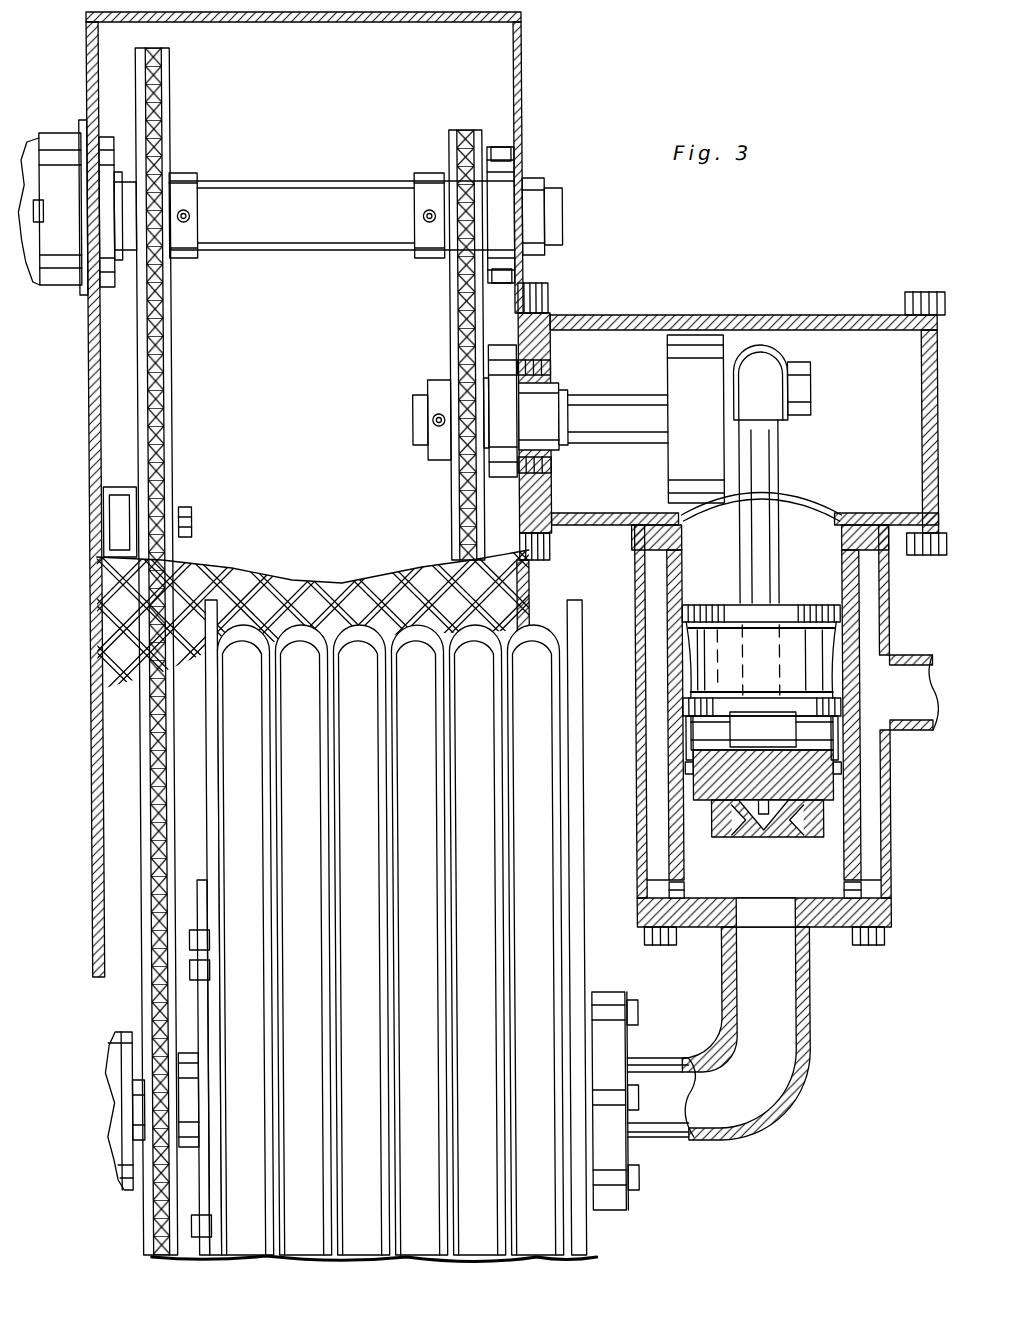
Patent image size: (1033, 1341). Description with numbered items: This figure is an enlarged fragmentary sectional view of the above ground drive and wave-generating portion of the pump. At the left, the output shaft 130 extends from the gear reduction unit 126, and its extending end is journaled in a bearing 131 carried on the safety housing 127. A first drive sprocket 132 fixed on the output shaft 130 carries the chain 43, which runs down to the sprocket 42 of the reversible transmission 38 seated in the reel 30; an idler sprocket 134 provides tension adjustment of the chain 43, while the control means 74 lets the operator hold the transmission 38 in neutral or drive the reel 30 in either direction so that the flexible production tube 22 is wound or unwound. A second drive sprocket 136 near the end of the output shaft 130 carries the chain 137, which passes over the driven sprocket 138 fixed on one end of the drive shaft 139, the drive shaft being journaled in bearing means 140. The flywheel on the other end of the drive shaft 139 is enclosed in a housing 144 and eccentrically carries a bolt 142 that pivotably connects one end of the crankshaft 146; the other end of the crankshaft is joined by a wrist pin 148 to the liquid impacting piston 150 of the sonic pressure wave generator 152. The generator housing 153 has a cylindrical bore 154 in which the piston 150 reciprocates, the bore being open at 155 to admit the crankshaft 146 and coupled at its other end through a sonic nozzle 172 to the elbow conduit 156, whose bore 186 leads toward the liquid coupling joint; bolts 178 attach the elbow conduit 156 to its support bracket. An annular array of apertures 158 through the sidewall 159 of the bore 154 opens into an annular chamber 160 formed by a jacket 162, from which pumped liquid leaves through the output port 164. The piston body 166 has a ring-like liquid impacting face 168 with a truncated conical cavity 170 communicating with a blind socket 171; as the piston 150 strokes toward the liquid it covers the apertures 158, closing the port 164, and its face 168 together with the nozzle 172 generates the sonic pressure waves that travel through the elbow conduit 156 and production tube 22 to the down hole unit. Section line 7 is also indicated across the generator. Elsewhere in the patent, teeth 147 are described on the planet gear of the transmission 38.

The flexible production tube 22 is at (258, 1248).
The reel 30 is at (600, 1263).
The reversible transmission 38 is at (206, 915).
The sprocket 42 is at (196, 1058).
The chain 43 is at (172, 385).
The control means 74 is at (99, 1104).
The gear reduction unit 126 is at (75, 135).
The safety housing 127 is at (520, 95).
The output shaft 130 is at (286, 186).
The bearing 131 is at (536, 180).
The first drive sprocket 132 is at (198, 185).
The idler sprocket 134 is at (192, 528).
The second drive sprocket 136 is at (436, 182).
The chain 137 is at (450, 288).
The driven sprocket 138 is at (428, 382).
The drive shaft 139 is at (582, 392).
The bearing means 140 is at (557, 455).
The bolt 142 is at (667, 353).
The housing 144 is at (818, 302).
The crankshaft 146 is at (779, 475).
The teeth 147 is at (810, 398).
The wrist pin 148 is at (686, 720).
The liquid impacting piston 150 is at (806, 599).
The sonic pressure wave generator 152 is at (913, 611).
The housing 153 is at (632, 565).
The cylindrical bore 154 is at (714, 548).
The opening 155 is at (826, 508).
The elbow conduit 156 is at (793, 1100).
The apertures 158 is at (679, 864).
The sidewall 159 is at (660, 812).
The annular chamber 160 is at (642, 778).
The jacket 162 is at (888, 800).
The output port 164 is at (940, 646).
The piston body 166 is at (726, 640).
The liquid impacting face 168 is at (790, 832).
The truncated conical cavity 170 is at (763, 834).
The socket 171 is at (742, 830).
The sonic nozzle 172 is at (765, 918).
The bolts 178 is at (633, 1020).
The bore 186 is at (802, 1022).
The section line 7- 7 is at (622, 868).